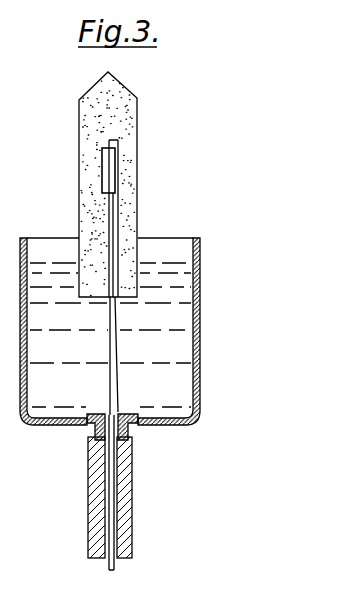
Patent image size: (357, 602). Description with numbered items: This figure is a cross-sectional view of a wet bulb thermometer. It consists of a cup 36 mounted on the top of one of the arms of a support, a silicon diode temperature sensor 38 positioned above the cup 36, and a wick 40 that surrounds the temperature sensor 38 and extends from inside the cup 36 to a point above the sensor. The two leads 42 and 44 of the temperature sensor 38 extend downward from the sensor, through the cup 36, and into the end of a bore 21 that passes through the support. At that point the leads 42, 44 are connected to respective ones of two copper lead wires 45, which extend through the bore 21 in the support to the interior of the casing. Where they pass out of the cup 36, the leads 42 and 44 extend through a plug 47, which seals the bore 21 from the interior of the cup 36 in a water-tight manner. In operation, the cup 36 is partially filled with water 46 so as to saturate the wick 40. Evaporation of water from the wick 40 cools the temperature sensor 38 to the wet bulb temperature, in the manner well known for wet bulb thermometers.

The bore 21 is at (107, 520).
The cup 36 is at (200, 255).
The silicon diode temperature sensor 38 is at (108, 164).
The wick 40 is at (137, 108).
The lead 42 is at (115, 314).
The lead 44 is at (108, 212).
The copper lead wires 45 is at (112, 482).
The water 46 is at (170, 272).
The plug 47 is at (123, 416).